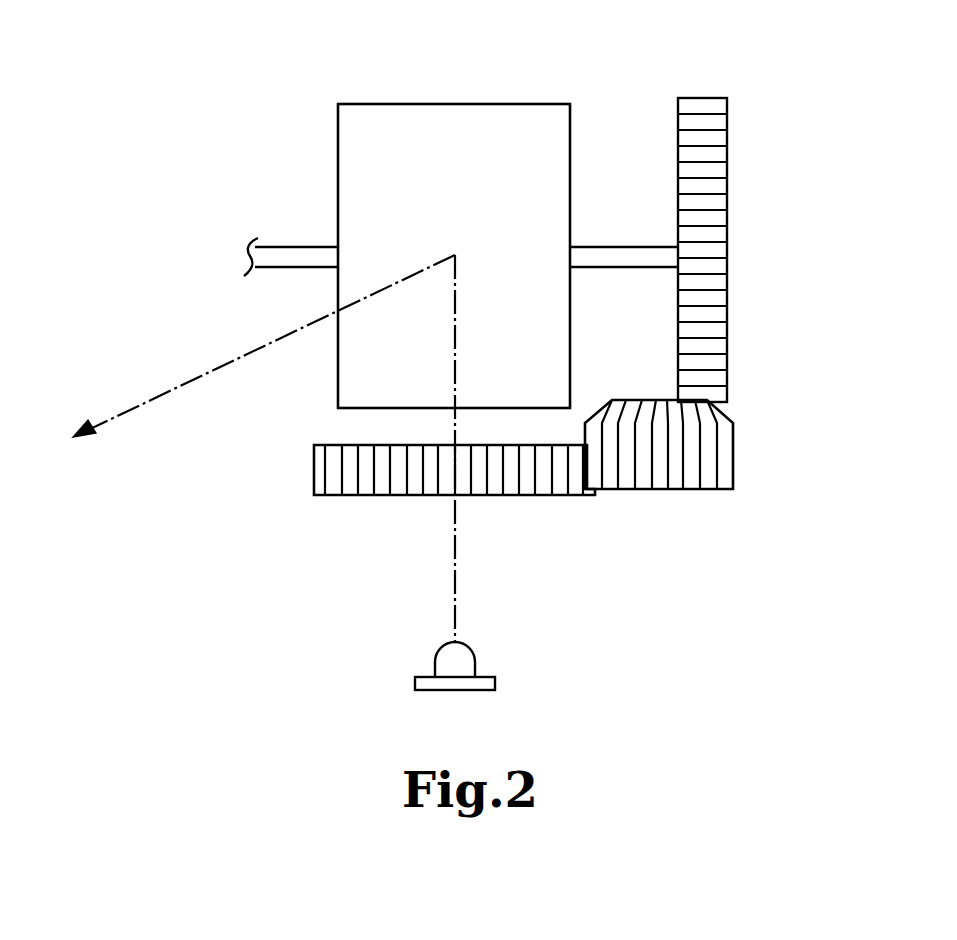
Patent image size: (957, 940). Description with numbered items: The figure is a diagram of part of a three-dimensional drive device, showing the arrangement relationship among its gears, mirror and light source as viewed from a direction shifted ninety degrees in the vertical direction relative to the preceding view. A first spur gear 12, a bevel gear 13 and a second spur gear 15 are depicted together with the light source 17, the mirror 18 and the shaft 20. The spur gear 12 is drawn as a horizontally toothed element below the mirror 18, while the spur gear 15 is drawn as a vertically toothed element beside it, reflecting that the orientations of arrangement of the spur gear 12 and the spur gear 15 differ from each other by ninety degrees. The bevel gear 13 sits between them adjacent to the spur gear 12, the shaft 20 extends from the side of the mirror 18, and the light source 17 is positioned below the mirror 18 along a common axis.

The spur gear 12 is at (330, 485).
The bevel gear 13 is at (692, 478).
The spur gear 15 is at (722, 390).
The light source 17 is at (485, 683).
The mirror 18 is at (547, 104).
The shaft 20 is at (284, 257).